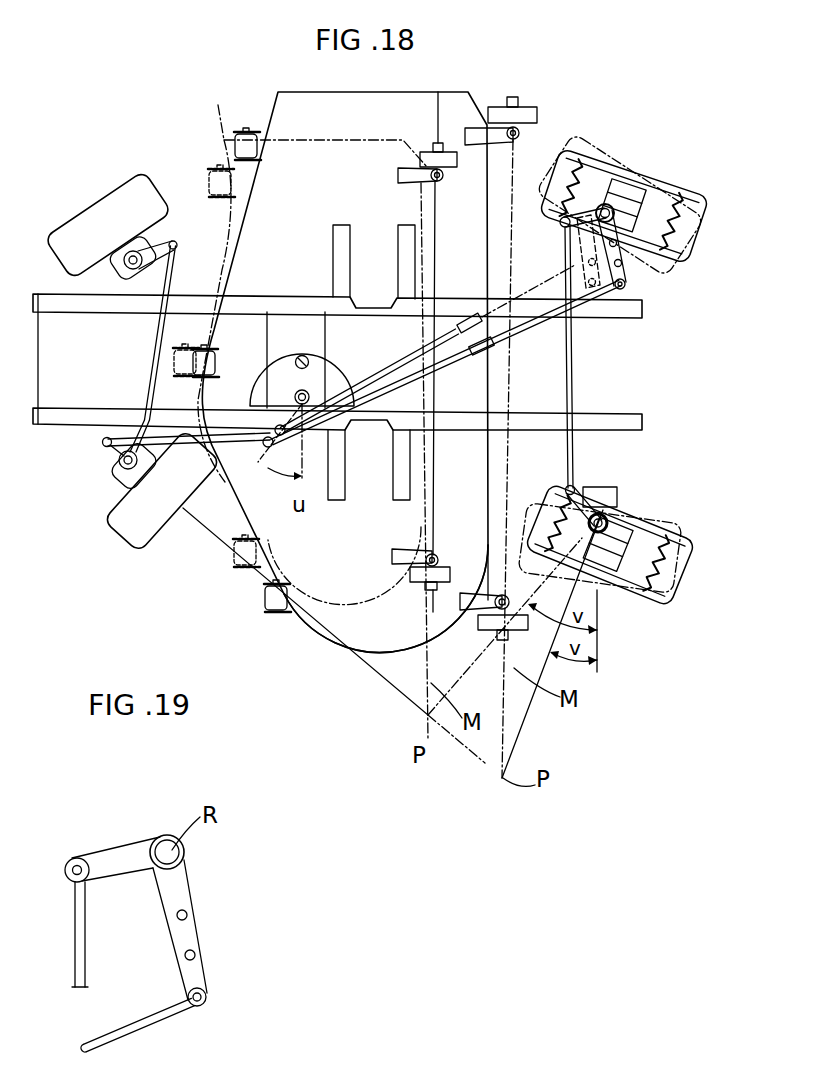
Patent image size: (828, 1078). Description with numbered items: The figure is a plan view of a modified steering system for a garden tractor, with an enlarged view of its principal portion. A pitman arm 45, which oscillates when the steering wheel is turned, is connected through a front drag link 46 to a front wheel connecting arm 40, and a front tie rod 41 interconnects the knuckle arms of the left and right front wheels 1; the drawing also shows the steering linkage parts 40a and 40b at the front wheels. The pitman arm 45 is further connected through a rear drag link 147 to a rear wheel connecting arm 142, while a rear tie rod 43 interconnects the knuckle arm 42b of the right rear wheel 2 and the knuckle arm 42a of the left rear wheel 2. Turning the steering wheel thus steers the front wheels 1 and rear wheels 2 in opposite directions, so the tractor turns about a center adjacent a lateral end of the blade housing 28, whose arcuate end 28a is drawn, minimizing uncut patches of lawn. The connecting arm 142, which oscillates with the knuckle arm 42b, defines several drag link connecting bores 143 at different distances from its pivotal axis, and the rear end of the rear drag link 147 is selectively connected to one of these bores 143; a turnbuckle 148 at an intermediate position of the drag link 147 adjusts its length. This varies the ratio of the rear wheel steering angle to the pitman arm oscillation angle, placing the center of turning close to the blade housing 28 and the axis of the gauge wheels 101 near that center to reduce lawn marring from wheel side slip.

In FIG. 18, the front wheel 1 is at (77, 212).
In FIG. 18, the rear wheel 2 is at (697, 190).
In FIG. 18, the blade housing 28 is at (268, 121).
In FIG. 18, the arcuate end of body 28a is at (383, 657).
In FIG. 18, the front wheel connecting arm 40 is at (110, 452).
In FIG. 18, the tie rod end 40a is at (103, 438).
In FIG. 18, the steering knuckle arm 40b is at (167, 242).
In FIG. 18, the front tie rod 41 is at (158, 367).
In FIG. 18, the knuckle arm 42a is at (593, 510).
In FIG. 18, the knuckle arm 42b is at (583, 223).
In FIG. 19, the knuckle arm 42b is at (105, 852).
In FIG. 18, the rear tie rod 43 is at (571, 367).
In FIG. 19, the rear tie rod 43 is at (90, 980).
In FIG. 18, the pitman arm 45 is at (293, 396).
In FIG. 18, the front drag link 46 is at (192, 442).
In FIG. 18, the gauge wheel 101 is at (537, 120).
In FIG. 18, the rear wheel connecting arm 142 is at (628, 281).
In FIG. 19, the rear wheel connecting arm 142 is at (198, 891).
In FIG. 19, the drag link connecting bores 143 is at (187, 917).
In FIG. 18, the rear drag link 147 is at (450, 367).
In FIG. 19, the rear drag link 147 is at (113, 1043).
In FIG. 18, the turnbuckle 148 is at (507, 342).